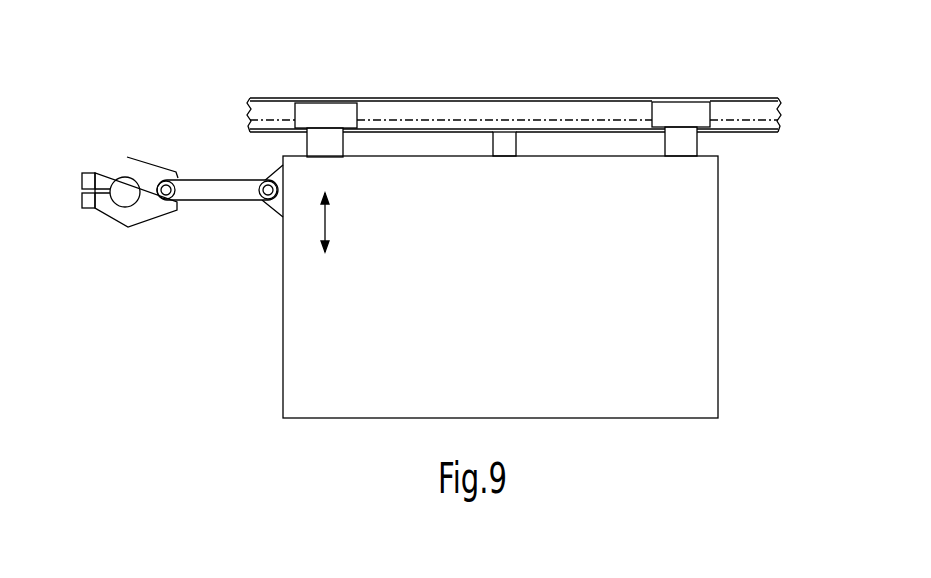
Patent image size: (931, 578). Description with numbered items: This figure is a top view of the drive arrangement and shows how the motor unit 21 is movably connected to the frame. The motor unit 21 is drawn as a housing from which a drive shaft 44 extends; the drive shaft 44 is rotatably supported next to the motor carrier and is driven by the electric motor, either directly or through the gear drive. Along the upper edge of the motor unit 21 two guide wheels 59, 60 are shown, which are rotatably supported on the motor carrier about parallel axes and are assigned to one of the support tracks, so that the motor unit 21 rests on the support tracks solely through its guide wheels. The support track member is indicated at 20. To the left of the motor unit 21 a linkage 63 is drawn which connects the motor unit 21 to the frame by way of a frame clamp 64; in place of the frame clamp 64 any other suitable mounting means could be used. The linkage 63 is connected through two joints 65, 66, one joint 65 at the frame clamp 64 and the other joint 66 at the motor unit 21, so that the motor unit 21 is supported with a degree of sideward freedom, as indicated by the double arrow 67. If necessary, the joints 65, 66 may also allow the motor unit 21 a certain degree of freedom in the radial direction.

The guide rail 20 is at (516, 72).
The motor unit 21 is at (265, 312).
The drive shaft 44 is at (505, 148).
The guide wheel 59 is at (322, 112).
The guide wheel 60 is at (680, 110).
The linkage 63 is at (215, 193).
The frame clamp 64 is at (140, 168).
The joint 65 is at (175, 173).
The joint 66 is at (260, 200).
The arrow 67 is at (327, 217).